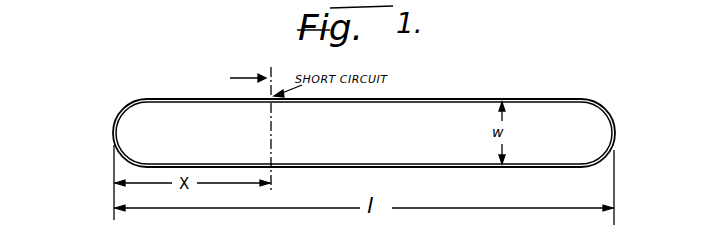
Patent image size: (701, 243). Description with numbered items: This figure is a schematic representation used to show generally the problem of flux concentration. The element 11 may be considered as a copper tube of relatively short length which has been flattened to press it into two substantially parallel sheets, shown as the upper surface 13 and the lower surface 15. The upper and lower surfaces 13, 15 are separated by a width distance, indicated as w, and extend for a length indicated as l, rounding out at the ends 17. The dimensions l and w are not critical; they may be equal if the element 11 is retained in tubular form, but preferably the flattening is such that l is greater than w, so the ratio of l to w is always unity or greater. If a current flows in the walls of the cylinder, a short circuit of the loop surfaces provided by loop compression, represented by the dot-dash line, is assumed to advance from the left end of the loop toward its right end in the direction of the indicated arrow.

The element 11 is at (354, 130).
The upper surface 13 is at (452, 100).
The lower surface 15 is at (463, 168).
The rounded ends 17 is at (115, 117).